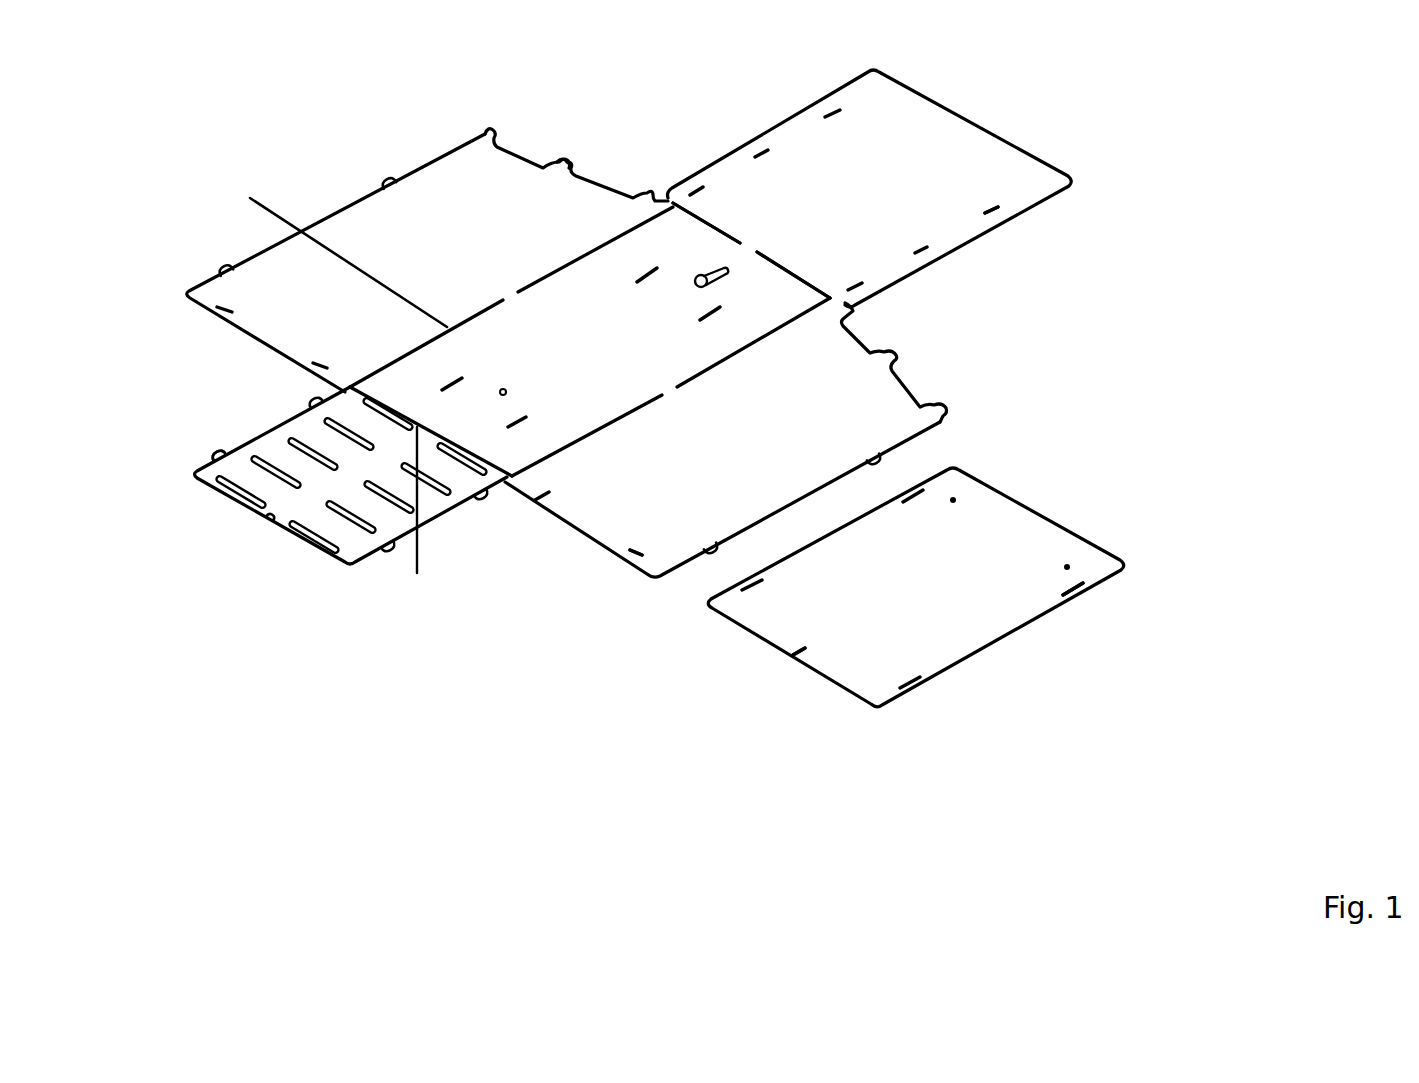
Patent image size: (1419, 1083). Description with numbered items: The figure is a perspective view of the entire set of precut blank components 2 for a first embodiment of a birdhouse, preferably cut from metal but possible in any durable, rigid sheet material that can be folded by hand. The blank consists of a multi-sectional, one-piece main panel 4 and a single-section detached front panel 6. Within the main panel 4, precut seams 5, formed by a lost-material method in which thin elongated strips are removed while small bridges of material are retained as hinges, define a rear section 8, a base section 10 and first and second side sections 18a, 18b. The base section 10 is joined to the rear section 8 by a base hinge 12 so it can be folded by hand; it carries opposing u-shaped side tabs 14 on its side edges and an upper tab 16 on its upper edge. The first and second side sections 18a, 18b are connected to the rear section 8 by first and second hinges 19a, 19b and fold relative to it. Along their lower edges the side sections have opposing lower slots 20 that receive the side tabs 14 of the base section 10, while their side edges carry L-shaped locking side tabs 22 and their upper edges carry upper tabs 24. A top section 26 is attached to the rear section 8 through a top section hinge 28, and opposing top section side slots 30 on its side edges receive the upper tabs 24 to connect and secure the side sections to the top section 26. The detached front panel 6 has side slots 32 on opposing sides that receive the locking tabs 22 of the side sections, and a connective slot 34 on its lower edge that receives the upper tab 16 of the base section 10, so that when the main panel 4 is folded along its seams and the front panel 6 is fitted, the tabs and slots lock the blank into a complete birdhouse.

The precut blank components 2 is at (76, 907).
The main panel 4 is at (231, 155).
The precut seams 5 is at (330, 253).
The detached front panel 6 is at (1045, 512).
The rear section 8 is at (578, 398).
The base section 10 is at (227, 467).
The base hinge 12 is at (413, 519).
The side tabs 14 is at (213, 450).
The upper tab 16 is at (263, 525).
The first side section 18a is at (303, 317).
The second side section 18b is at (605, 497).
The first hinge 19a is at (500, 292).
The second hinge 19b is at (690, 388).
The lower slots 20 is at (632, 568).
The side tabs 22 is at (380, 167).
The upper tabs 24 is at (582, 157).
The top section 26 is at (983, 122).
The top section hinge 28 is at (747, 240).
The top section side slots 30 is at (1000, 213).
The side slots 32 is at (1073, 595).
The connective slot 34 is at (792, 655).